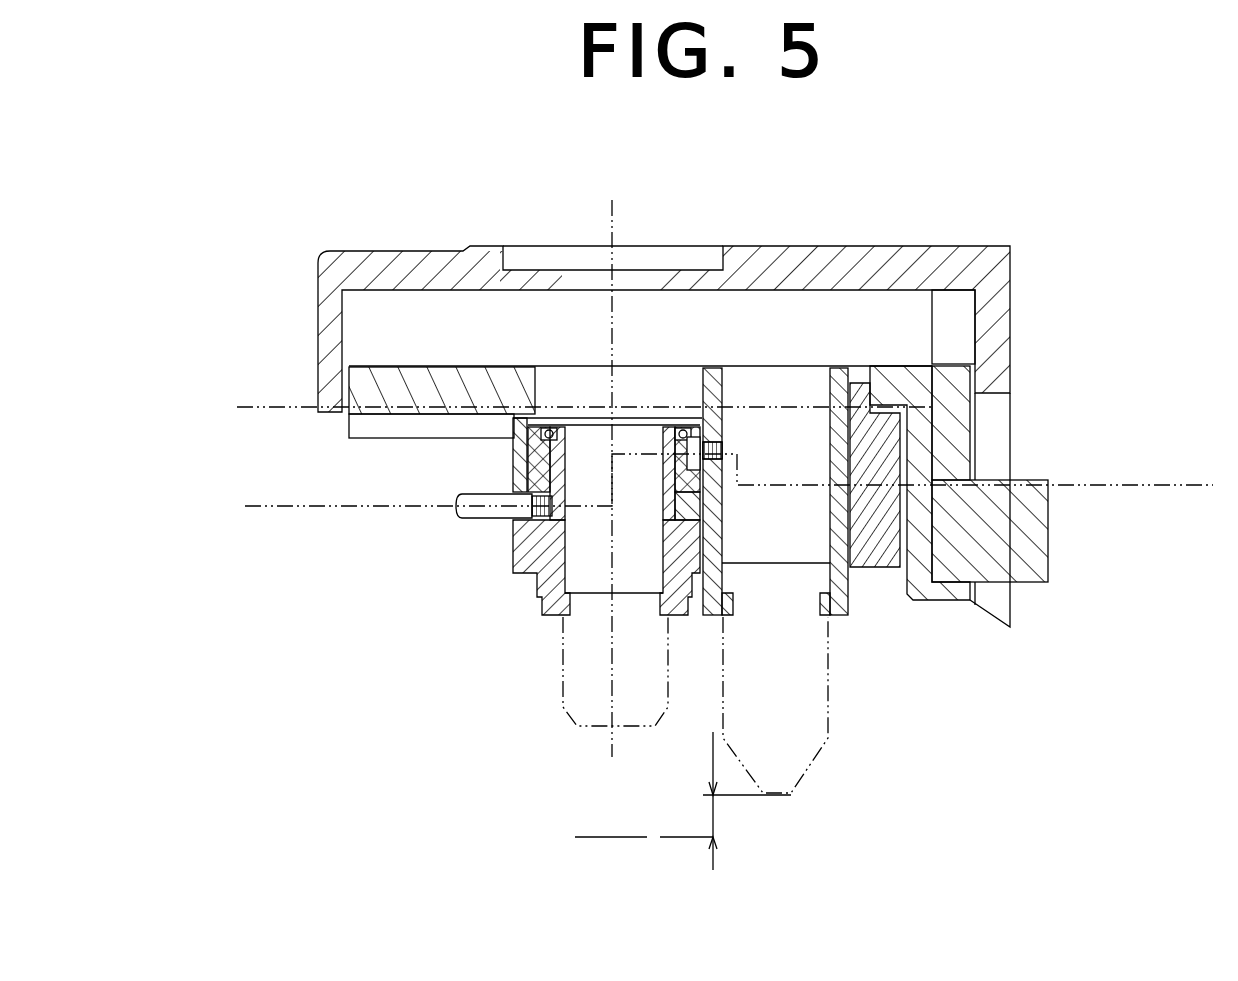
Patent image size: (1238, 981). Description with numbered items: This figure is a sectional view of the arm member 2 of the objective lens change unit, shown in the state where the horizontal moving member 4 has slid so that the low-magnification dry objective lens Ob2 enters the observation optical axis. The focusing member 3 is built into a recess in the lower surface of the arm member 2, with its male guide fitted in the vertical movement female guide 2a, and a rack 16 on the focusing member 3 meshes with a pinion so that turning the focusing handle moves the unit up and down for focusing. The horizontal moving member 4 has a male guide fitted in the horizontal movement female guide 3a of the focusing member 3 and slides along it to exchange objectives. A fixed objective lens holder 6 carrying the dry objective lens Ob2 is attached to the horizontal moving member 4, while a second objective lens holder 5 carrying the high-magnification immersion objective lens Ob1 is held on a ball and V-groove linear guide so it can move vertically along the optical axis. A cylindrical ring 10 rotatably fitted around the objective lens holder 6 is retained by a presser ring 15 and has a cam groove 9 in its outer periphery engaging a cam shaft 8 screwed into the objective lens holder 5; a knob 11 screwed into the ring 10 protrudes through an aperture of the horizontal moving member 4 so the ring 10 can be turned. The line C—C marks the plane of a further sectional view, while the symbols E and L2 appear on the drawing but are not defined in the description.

The arm member 2 is at (953, 263).
The vertical movement female guide 2a is at (957, 328).
The focusing member 3 is at (375, 390).
The horizontal movement female guide 3a is at (363, 428).
The horizontal moving member 4 is at (875, 547).
The objective lens holder 5 is at (843, 592).
The objective lens holder 6 is at (537, 594).
The cam shaft 8 is at (693, 425).
The cam groove 9 is at (660, 420).
The cylindrical ring 10 is at (530, 470).
The knob 11 is at (495, 518).
The presser ring 15 is at (540, 424).
The rack 16 is at (1030, 543).
The high-magnification immersion objective lens Ob1 is at (797, 720).
The low-magnification dry objective lens Ob2 is at (567, 683).
The distance L2 is at (683, 801).
The axis E is at (200, 350).
The line C— C is at (225, 506).